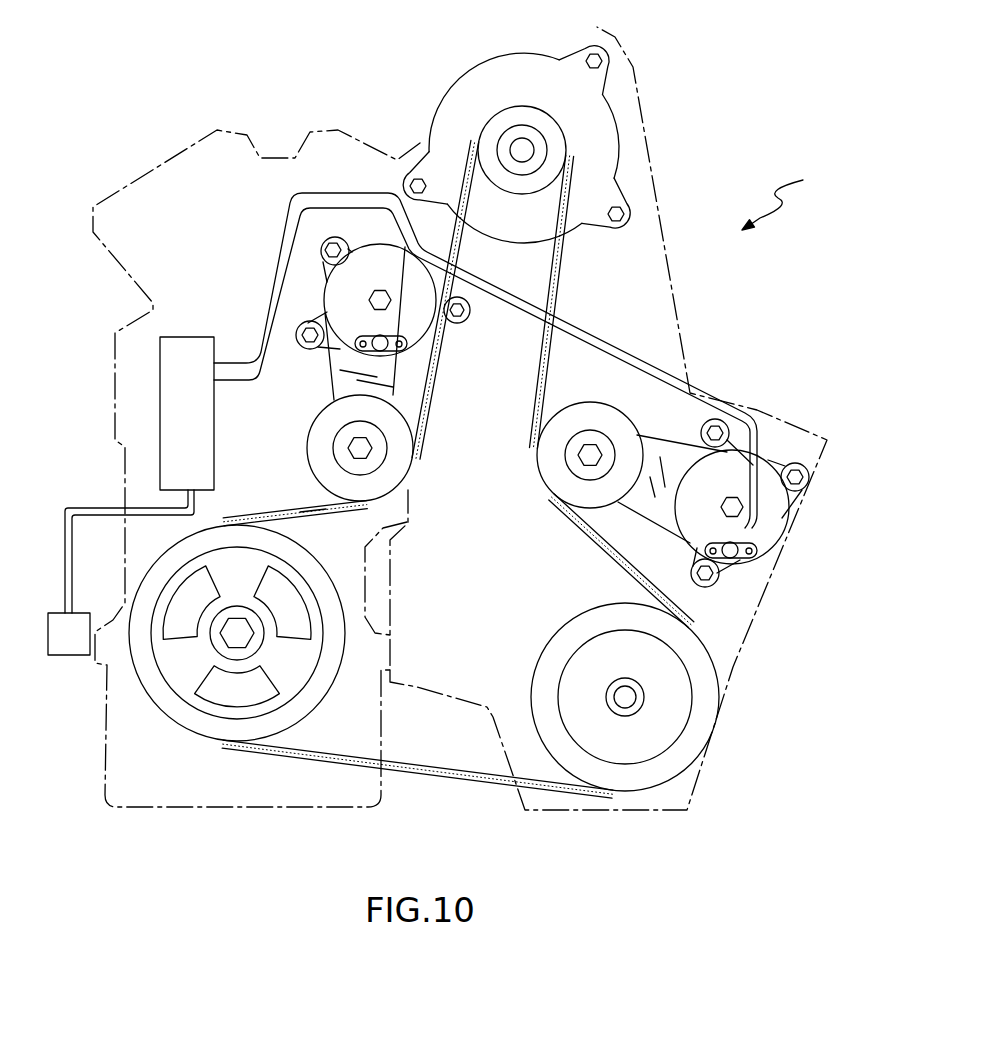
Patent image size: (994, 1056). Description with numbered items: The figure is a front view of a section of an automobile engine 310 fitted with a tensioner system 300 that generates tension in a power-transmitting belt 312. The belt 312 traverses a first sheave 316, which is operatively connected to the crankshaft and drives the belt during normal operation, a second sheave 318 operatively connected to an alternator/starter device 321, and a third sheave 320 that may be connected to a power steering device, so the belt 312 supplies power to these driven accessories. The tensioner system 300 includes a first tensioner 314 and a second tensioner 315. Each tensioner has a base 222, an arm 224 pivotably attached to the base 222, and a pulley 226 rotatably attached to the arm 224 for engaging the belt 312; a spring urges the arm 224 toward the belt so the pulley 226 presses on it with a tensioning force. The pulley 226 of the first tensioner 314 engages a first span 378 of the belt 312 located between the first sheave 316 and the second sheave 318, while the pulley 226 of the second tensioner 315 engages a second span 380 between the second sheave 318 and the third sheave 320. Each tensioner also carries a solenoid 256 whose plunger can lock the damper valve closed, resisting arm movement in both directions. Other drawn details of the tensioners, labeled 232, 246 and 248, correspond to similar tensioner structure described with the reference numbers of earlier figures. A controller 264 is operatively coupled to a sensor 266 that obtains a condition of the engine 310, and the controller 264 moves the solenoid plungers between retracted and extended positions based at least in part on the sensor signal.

The tensioner system 300 is at (804, 193).
The automobile engine 310 is at (675, 315).
The power-transmitting belt 312 is at (447, 773).
The first tensioner 314 is at (306, 411).
The second tensioner 315 is at (677, 411).
The first sheave 316 is at (200, 727).
The second sheave 318 is at (572, 145).
The third sheave 320 is at (618, 785).
The alternator/starter device 321 is at (478, 78).
The base 222 is at (327, 267).
The arm 224 is at (400, 373).
The pulley 226 is at (398, 467).
The mounting bolt 232 is at (328, 249).
The tensioner housing 246 is at (333, 297).
The hex nut 248 is at (378, 291).
The solenoid 256 is at (372, 353).
The controller 264 is at (160, 468).
The sensor 266 is at (65, 657).
The first span 378 is at (298, 511).
The second span 380 is at (620, 577).